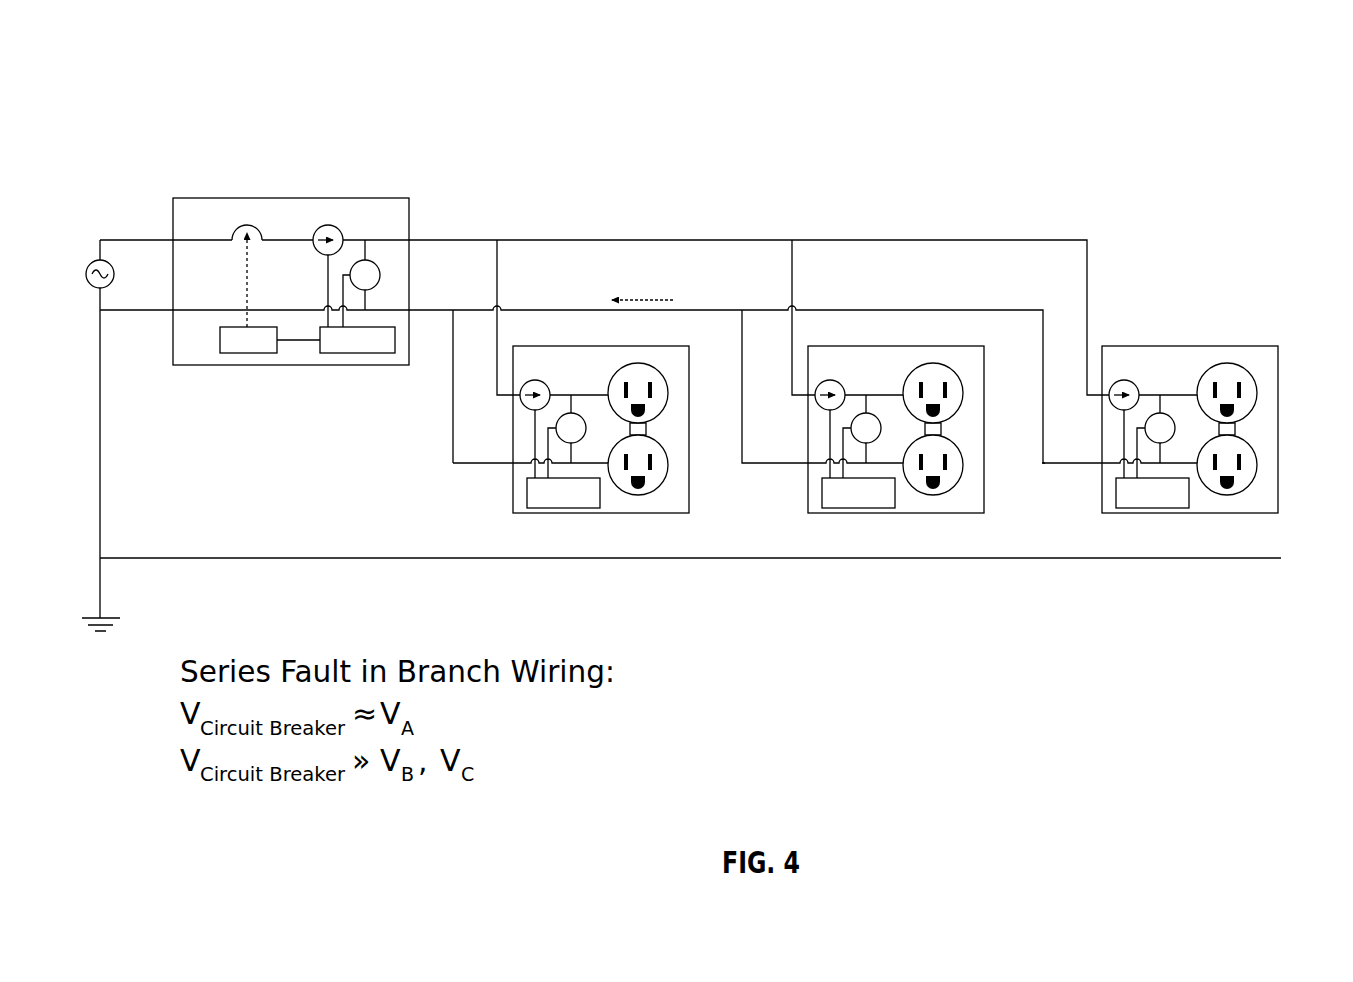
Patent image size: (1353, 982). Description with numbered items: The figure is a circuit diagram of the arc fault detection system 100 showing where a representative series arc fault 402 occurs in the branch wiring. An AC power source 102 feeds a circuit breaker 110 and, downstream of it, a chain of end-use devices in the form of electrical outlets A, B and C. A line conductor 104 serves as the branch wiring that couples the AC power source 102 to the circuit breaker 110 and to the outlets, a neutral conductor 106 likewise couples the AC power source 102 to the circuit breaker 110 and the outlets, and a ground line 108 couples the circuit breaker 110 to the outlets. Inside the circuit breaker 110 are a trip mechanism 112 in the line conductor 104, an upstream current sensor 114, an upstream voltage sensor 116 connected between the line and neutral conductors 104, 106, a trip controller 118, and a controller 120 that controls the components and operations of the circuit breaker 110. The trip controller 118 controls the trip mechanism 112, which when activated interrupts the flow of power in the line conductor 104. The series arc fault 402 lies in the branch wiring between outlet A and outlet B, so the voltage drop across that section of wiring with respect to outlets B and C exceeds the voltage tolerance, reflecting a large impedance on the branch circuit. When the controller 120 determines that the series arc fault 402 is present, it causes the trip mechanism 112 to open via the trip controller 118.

The arc fault detection system 100 is at (1152, 171).
The AC power source 102 is at (93, 289).
The line conductor 104 is at (900, 240).
The neutral conductor 106 is at (900, 310).
The ground line 108 is at (362, 557).
The circuit breaker 110 is at (222, 194).
The trip mechanism 112 is at (248, 216).
The current sensor 114 is at (335, 220).
The voltage sensor 116 is at (373, 252).
The trip controller 118 is at (242, 351).
The controller 120 is at (373, 353).
The series arc fault 402 is at (703, 290).